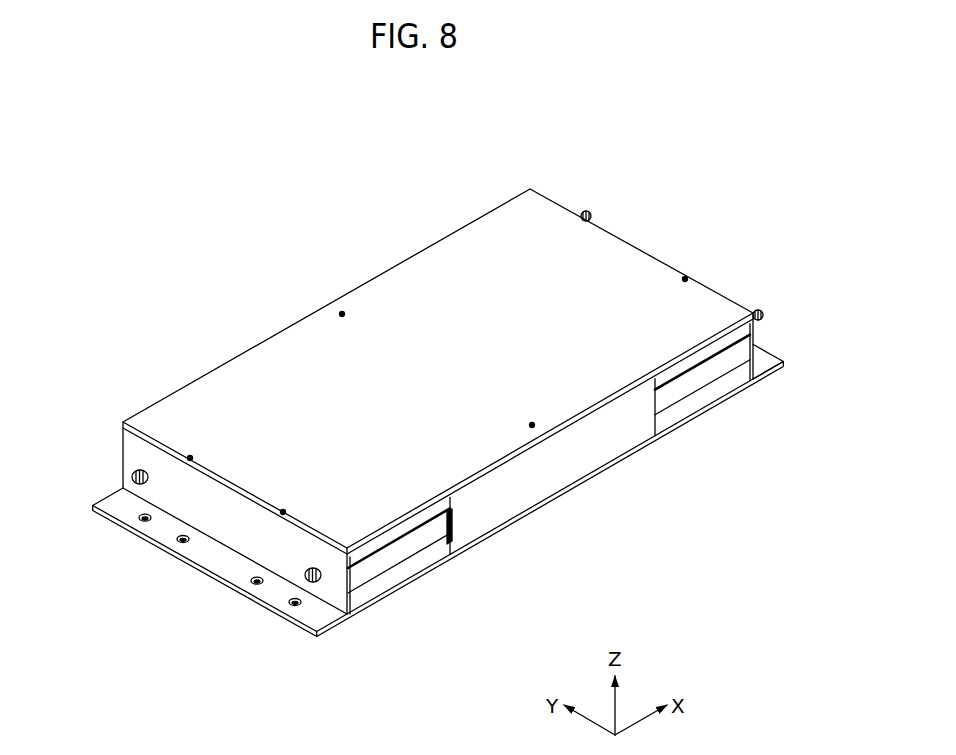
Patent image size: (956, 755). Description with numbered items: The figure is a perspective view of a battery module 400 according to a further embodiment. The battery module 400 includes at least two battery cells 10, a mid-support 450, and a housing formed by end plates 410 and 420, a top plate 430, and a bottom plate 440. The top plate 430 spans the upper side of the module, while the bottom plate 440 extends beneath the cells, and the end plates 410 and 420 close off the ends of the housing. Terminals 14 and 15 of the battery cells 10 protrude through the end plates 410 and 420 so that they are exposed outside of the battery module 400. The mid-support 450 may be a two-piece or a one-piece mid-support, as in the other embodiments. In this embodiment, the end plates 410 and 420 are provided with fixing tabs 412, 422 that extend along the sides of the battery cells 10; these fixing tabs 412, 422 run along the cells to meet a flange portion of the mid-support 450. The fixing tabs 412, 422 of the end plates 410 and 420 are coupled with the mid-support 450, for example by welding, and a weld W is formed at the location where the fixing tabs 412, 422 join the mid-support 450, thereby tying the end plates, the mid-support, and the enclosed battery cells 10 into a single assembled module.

The battery module 400 is at (712, 178).
The top plate 430 is at (462, 270).
The mid-support 450 is at (555, 492).
The bottom plate 440 is at (236, 594).
The end plate 410 is at (170, 517).
The fixing tab 412 is at (370, 573).
The end plate 420 is at (768, 341).
The fixing tab 422 is at (688, 388).
The battery cell 10 is at (417, 582).
The weld W is at (456, 534).
The terminal 14 is at (118, 488).
The terminal 15 is at (305, 590).